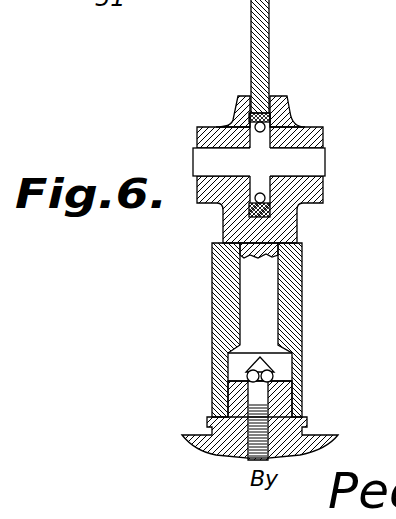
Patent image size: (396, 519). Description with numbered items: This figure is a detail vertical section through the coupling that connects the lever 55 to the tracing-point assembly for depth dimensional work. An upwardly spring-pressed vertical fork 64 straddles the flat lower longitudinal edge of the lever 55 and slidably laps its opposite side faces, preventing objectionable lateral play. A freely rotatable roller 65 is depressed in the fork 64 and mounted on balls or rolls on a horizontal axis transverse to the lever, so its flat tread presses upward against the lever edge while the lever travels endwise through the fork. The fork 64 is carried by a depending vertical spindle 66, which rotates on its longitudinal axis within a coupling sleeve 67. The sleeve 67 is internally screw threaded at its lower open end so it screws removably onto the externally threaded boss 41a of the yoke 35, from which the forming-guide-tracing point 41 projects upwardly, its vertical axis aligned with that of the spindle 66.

The lever 55 is at (270, 25).
The fork 64 is at (284, 108).
The roller 65 is at (279, 118).
The spindle 66 is at (266, 294).
The coupling sleeve 67 is at (302, 318).
The forming-guide-tracing point 41 is at (268, 362).
The boss 41a is at (283, 398).
The yoke 35 is at (206, 452).